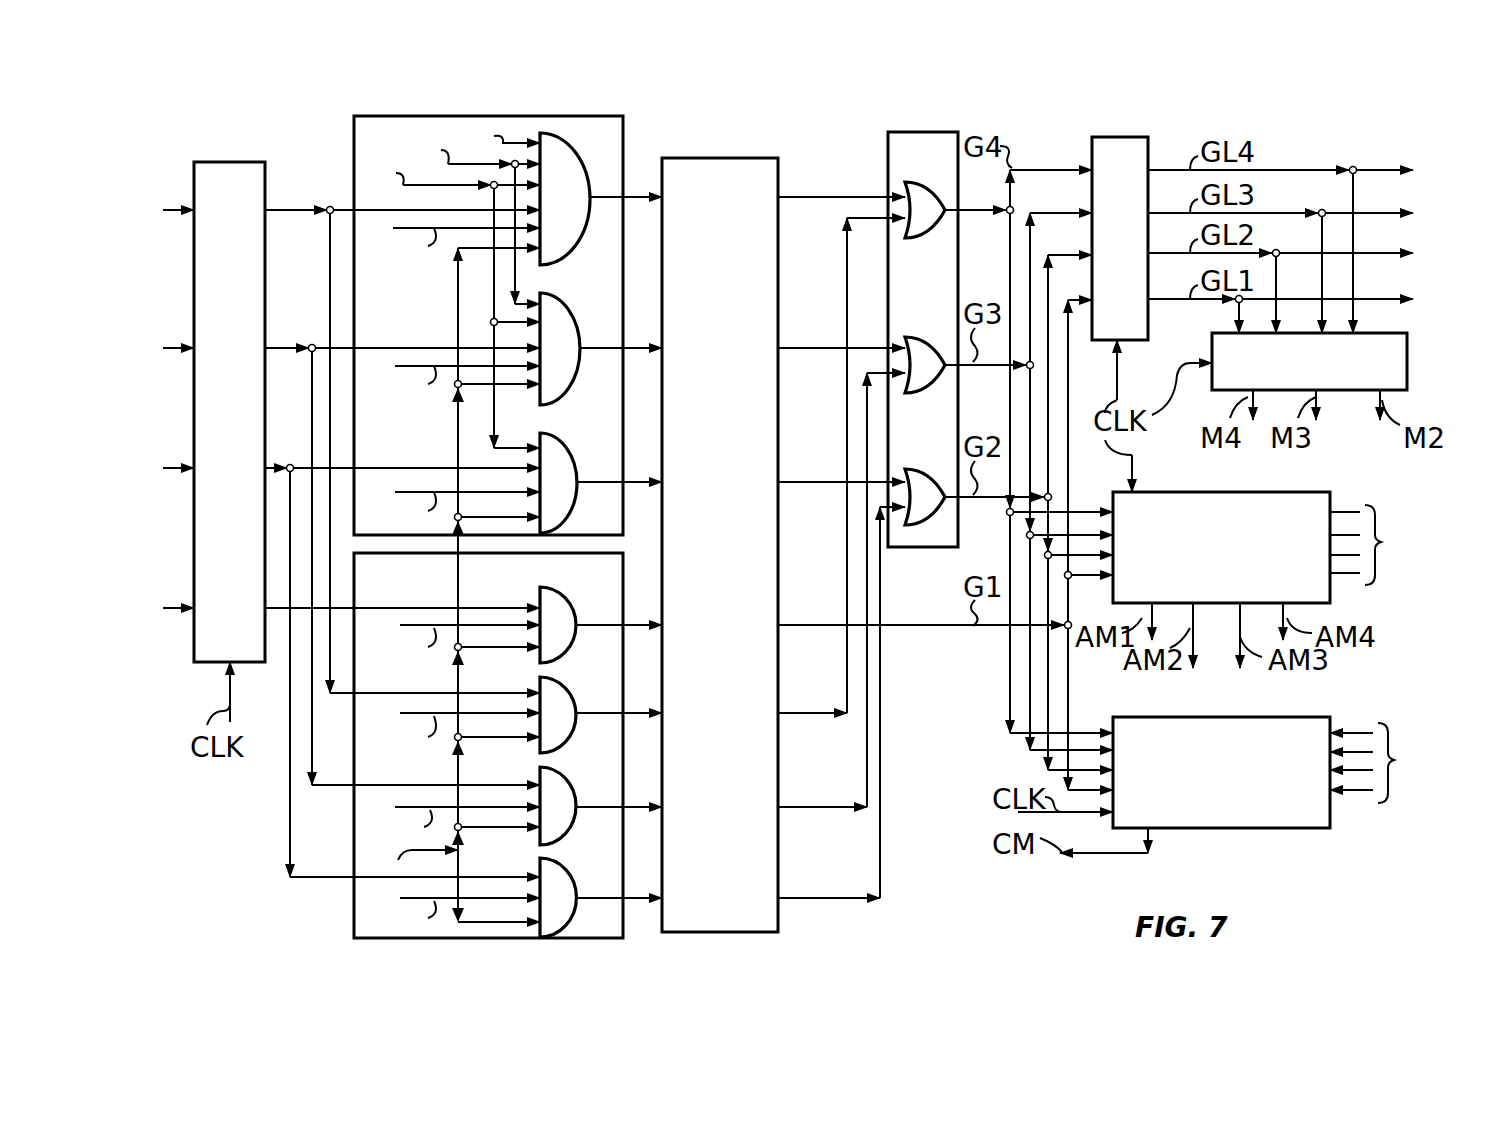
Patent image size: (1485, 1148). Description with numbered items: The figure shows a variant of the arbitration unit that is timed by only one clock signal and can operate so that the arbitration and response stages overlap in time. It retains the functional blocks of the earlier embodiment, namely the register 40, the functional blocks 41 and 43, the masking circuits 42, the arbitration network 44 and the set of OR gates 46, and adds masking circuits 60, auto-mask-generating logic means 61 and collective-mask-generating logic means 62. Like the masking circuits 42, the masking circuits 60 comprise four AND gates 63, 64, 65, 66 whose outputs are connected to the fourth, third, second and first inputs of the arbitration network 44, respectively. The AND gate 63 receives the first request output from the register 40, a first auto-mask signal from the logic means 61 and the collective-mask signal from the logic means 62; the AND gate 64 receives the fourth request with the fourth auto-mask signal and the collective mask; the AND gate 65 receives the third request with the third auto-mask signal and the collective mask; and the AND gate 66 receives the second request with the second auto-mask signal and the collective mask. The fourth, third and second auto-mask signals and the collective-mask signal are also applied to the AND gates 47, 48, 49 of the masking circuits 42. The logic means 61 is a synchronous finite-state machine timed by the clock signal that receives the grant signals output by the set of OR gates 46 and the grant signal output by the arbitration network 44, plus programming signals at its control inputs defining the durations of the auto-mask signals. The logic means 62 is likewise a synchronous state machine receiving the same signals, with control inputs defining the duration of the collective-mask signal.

The register 40 is at (214, 162).
The functional block 41 is at (1125, 138).
The masking circuits 42 is at (354, 131).
The functional block 43 is at (1407, 355).
The arbitration network 44 is at (696, 158).
The set of OR gates 46 is at (888, 174).
The AND gate 47 is at (571, 177).
The AND gate 48 is at (564, 330).
The AND gate 49 is at (564, 474).
The masking circuits 60 is at (354, 912).
The auto-mask-generating logic means 61 is at (1330, 495).
The collective-mask-generating logic means 62 is at (1330, 718).
The AND gate 63 is at (568, 612).
The AND gate 64 is at (568, 703).
The AND gate 65 is at (566, 800).
The AND gate 66 is at (566, 892).